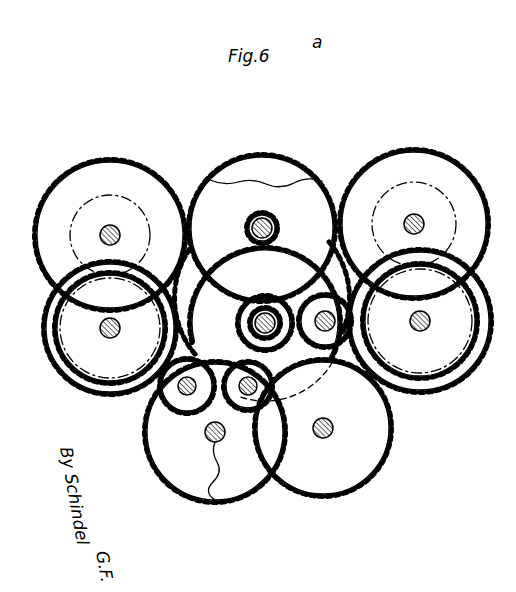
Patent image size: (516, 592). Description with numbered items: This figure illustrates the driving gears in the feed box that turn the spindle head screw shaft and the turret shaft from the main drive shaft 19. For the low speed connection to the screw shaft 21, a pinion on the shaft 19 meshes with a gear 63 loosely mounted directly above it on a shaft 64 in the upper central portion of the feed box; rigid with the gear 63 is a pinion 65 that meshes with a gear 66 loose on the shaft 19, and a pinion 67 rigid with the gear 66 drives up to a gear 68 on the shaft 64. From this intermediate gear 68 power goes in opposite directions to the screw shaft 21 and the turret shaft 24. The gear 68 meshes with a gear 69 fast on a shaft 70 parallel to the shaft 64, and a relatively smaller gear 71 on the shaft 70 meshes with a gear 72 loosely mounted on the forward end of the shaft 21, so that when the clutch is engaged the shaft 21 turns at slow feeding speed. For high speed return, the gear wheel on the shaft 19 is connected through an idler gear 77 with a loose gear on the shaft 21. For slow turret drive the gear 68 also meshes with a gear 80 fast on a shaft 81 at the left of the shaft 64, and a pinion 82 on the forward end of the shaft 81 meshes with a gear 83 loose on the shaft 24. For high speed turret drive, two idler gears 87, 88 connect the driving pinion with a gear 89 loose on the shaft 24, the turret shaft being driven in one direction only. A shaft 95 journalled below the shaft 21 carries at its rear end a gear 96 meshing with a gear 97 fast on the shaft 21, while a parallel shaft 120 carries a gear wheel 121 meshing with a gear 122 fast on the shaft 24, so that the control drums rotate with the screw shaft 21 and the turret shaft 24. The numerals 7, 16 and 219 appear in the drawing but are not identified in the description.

The shaft 7 is at (489, 316).
The gear 16 is at (237, 322).
The main drive shaft 19 is at (267, 312).
The screw shaft 21 is at (426, 326).
The turret drive shaft 24 is at (115, 334).
The gear 63 is at (283, 160).
The shaft 64 is at (282, 228).
The pinion 65 is at (250, 217).
The gear 66 is at (224, 262).
The pinion 67 is at (298, 352).
The intermediate driving gear 68 is at (316, 200).
The gear 69 is at (470, 172).
The shaft 70 is at (413, 220).
The gear 71 is at (418, 182).
The gear 72 is at (444, 364).
The idler gear 77 is at (330, 346).
The gear 80 is at (130, 162).
The shaft 81 is at (120, 214).
The pinion 82 is at (90, 192).
The gear 83 is at (66, 354).
The idler gear 87 is at (245, 405).
The idler gear 88 is at (178, 413).
The gear 89 is at (90, 394).
The shaft 95 is at (323, 438).
The gear 96 is at (356, 492).
The gear 97 is at (484, 337).
The shaft 120 is at (215, 451).
The gear wheel 121 is at (163, 483).
The gear 122 is at (64, 386).
The shaft 219 is at (501, 464).